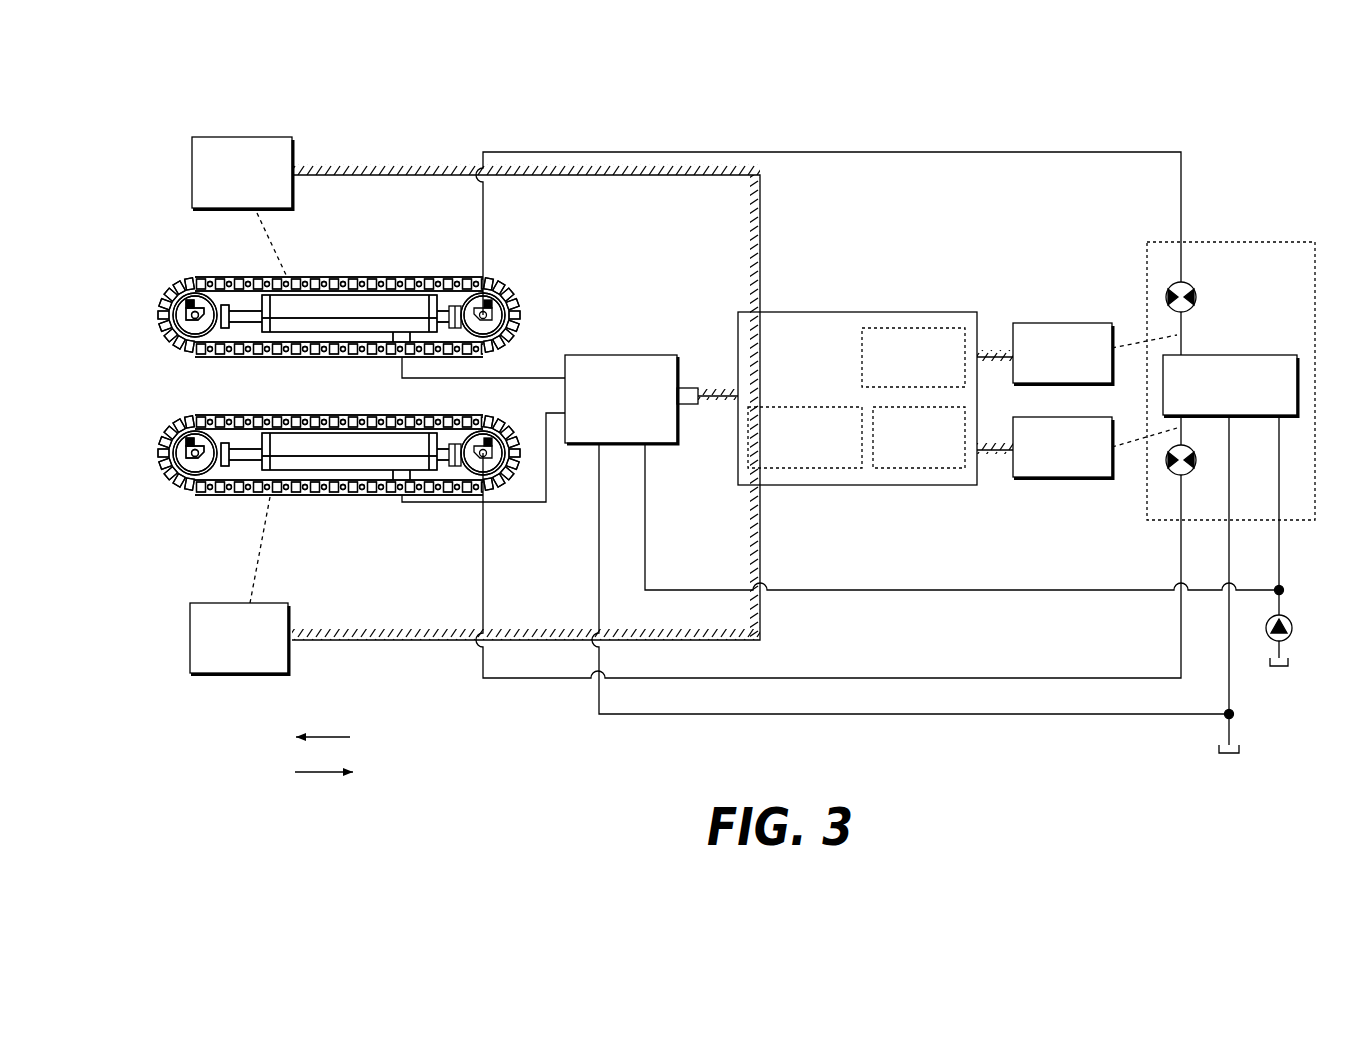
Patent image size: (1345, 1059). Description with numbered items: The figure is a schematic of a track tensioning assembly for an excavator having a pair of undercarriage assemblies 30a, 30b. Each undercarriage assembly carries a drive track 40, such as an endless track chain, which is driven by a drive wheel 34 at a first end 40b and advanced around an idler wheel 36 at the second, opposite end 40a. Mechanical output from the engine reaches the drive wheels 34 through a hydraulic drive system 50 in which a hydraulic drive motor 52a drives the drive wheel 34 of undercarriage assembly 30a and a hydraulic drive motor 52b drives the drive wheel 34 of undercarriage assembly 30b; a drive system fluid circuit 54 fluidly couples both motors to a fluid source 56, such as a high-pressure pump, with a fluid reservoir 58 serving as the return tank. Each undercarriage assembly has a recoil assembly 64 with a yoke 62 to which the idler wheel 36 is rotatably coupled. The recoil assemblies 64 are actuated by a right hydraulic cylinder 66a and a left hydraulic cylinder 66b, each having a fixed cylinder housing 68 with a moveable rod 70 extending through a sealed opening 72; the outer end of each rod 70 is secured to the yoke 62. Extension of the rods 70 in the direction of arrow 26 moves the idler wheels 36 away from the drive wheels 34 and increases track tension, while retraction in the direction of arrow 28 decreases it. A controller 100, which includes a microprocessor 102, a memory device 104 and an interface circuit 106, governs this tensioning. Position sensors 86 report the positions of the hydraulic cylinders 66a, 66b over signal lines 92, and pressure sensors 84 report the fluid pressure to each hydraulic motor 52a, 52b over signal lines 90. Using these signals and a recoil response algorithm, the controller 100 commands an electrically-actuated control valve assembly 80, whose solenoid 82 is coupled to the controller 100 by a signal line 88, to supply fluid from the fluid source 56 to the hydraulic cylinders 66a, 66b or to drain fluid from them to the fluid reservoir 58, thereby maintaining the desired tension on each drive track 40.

The arrow 26 is at (333, 737).
The arrow 28 is at (330, 773).
The undercarriage assembly 30a is at (418, 243).
The undercarriage assembly 30b is at (305, 532).
The drive wheel 34 is at (482, 293).
The idler wheel 36 is at (158, 312).
The drive track 40 is at (178, 283).
The second end 40a is at (147, 323).
The first end 40b is at (531, 300).
The hydraulic drive system 50 is at (1237, 242).
The hydraulic drive motor 52a is at (1167, 288).
The hydraulic drive motor 52b is at (1167, 470).
The drive system fluid circuit 54 is at (1243, 355).
The fluid source 56 is at (1292, 620).
The fluid reservoir 58 is at (1240, 740).
The yoke 62 is at (214, 320).
The recoil assembly 64 is at (305, 275).
The right hydraulic cylinder 66a is at (323, 302).
The left hydraulic cylinder 66b is at (323, 440).
The cylinder housing 68 is at (385, 302).
The rod 70 is at (230, 303).
The sealed opening 72 is at (263, 296).
The control valve assembly 80 is at (626, 355).
The solenoid 82 is at (690, 405).
The pressure sensor 84 is at (1050, 323).
The position sensor 86 is at (262, 137).
The signal line 88 is at (706, 390).
The signal line 90 is at (988, 352).
The signal line 92 is at (406, 165).
The controller 100 is at (828, 312).
The microprocessor 102 is at (808, 468).
The memory device 104 is at (910, 468).
The interface circuit 106 is at (920, 328).